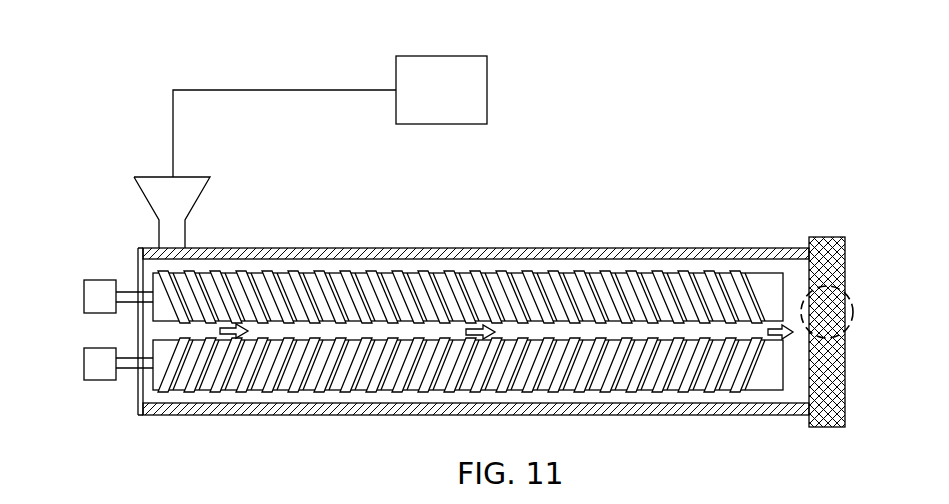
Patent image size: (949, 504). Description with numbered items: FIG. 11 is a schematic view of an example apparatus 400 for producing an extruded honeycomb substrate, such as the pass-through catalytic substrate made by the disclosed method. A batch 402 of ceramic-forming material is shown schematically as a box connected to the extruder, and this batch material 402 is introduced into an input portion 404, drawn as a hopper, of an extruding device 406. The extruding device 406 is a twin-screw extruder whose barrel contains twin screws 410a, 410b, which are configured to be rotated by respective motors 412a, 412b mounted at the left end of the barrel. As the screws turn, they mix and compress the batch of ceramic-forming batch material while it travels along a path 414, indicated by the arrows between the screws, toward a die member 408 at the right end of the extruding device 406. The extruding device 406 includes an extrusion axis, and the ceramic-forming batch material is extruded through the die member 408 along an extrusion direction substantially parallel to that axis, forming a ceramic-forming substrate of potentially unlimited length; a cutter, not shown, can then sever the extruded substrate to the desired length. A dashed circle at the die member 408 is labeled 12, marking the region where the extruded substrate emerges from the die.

The apparatus 400 is at (762, 131).
The batch of ceramic-forming material 402 is at (438, 124).
The input portion 404 is at (196, 177).
The extruding device 406 is at (593, 189).
The die member 408 is at (815, 237).
The twin screw 410a is at (642, 290).
The twin screw 410b is at (615, 378).
The motor 412a is at (102, 280).
The motor 412b is at (97, 380).
The path 414 is at (478, 334).
The extrudate / composite material 12 is at (853, 316).